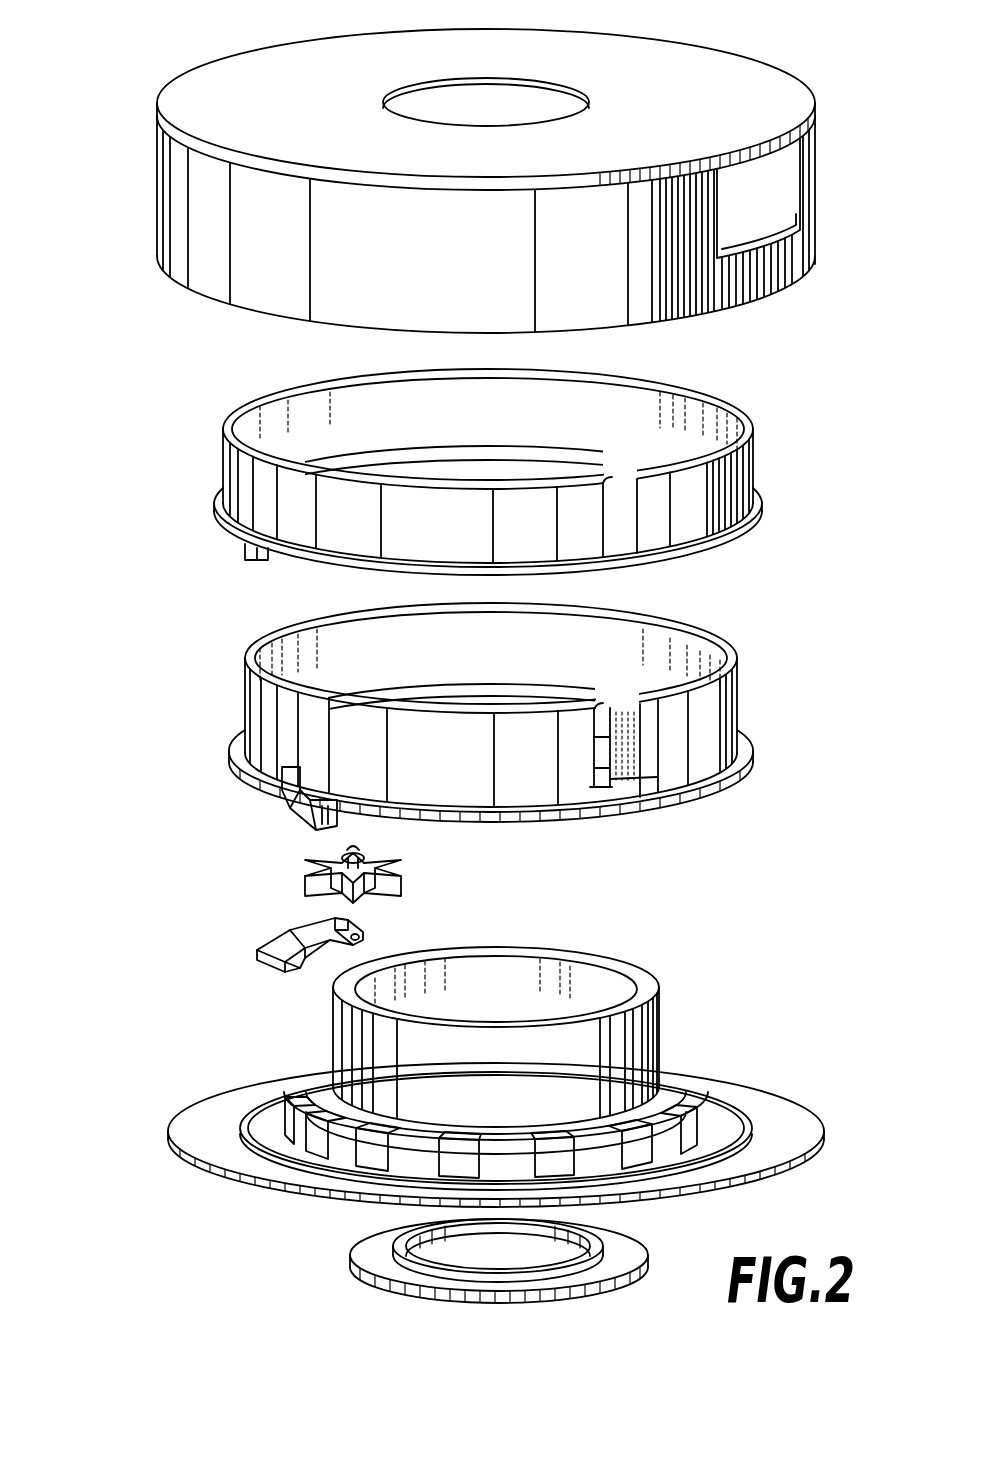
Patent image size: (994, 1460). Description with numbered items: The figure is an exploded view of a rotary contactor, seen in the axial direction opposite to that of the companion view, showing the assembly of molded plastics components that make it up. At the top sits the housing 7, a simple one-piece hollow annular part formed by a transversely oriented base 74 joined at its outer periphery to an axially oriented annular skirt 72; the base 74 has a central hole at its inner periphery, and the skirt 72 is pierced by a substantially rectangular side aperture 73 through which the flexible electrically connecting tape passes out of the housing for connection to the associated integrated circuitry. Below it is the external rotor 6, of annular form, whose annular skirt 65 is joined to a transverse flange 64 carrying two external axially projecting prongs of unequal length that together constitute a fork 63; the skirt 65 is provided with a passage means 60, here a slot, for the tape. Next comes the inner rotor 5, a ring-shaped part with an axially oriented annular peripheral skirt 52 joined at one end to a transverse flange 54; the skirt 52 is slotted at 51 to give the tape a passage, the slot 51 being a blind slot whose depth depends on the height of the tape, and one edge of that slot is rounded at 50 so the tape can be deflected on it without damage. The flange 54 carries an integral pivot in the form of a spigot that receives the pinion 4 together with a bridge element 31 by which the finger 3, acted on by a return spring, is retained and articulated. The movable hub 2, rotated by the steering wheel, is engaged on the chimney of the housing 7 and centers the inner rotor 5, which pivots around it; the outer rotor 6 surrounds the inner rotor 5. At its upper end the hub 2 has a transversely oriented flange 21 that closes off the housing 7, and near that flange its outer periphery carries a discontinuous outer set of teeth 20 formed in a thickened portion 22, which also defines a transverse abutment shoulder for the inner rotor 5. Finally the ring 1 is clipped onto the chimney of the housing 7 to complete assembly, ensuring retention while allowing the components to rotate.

The ring 1 is at (378, 1260).
The movable hub 2 is at (362, 1052).
The outer set of teeth 20 is at (300, 1133).
The flange 21 is at (534, 1106).
The thickened portion 22 is at (670, 1085).
The finger 3 is at (258, 972).
The bridge element 31 is at (281, 813).
The pinion 4 is at (285, 880).
The inner rotor 5 is at (472, 739).
The rounded portion 50 is at (618, 740).
The slot 51 is at (595, 735).
The annular peripheral skirt 52 is at (710, 717).
The transverse flange 54 is at (722, 793).
The external rotor 6 is at (485, 492).
The passage means 60 is at (632, 516).
The fork 63 is at (257, 556).
The transverse flange 64 is at (742, 530).
The annular skirt 65 is at (740, 472).
The housing 7 is at (475, 172).
The annular skirt 72 is at (210, 263).
The side aperture 73 is at (767, 202).
The base 74 is at (711, 88).